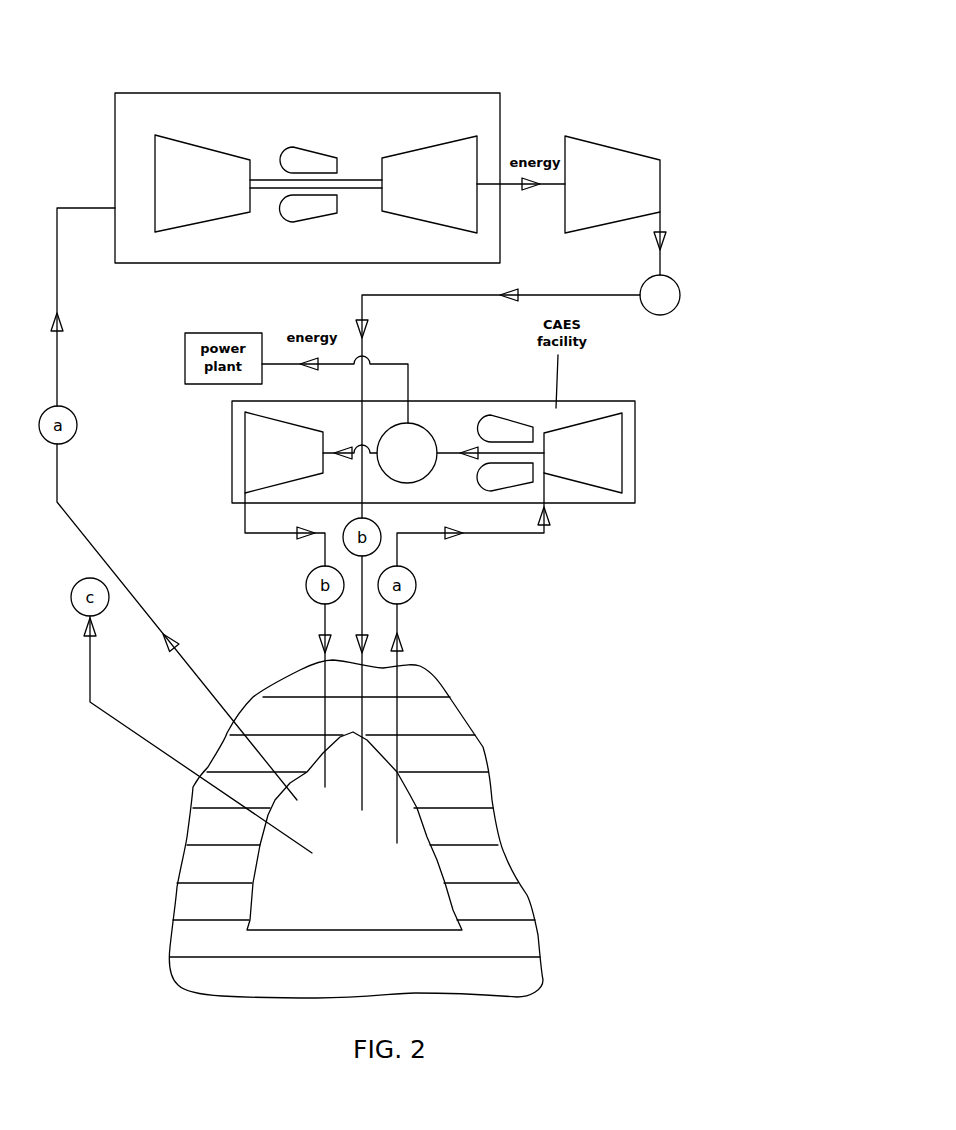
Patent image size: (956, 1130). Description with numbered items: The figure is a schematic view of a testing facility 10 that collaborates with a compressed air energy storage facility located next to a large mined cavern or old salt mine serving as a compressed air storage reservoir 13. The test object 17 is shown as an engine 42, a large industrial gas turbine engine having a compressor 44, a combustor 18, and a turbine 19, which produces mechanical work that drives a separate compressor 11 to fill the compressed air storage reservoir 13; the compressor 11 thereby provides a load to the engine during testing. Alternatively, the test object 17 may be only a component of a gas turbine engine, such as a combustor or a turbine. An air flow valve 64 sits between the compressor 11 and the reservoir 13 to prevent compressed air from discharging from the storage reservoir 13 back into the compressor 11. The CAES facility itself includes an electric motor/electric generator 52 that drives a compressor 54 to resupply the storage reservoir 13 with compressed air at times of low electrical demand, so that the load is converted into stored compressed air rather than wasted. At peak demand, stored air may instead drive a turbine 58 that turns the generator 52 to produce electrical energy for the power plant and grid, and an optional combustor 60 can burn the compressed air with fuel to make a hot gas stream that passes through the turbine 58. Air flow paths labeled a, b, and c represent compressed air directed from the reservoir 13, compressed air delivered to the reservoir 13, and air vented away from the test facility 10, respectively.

The testing facility 10 is at (102, 63).
The compressor 11 is at (594, 163).
The compressed air storage reservoir 13 is at (415, 870).
The test object 17 is at (428, 93).
The combustor 18 is at (313, 206).
The turbine 19 is at (460, 160).
The engine 42 is at (368, 118).
The compressor 44 is at (176, 157).
The electric motor/electric generator 52 is at (414, 438).
The compressor 54 is at (258, 453).
The turbine 58 is at (610, 453).
The combustor 60 is at (507, 475).
The air flow valve 64 is at (667, 300).